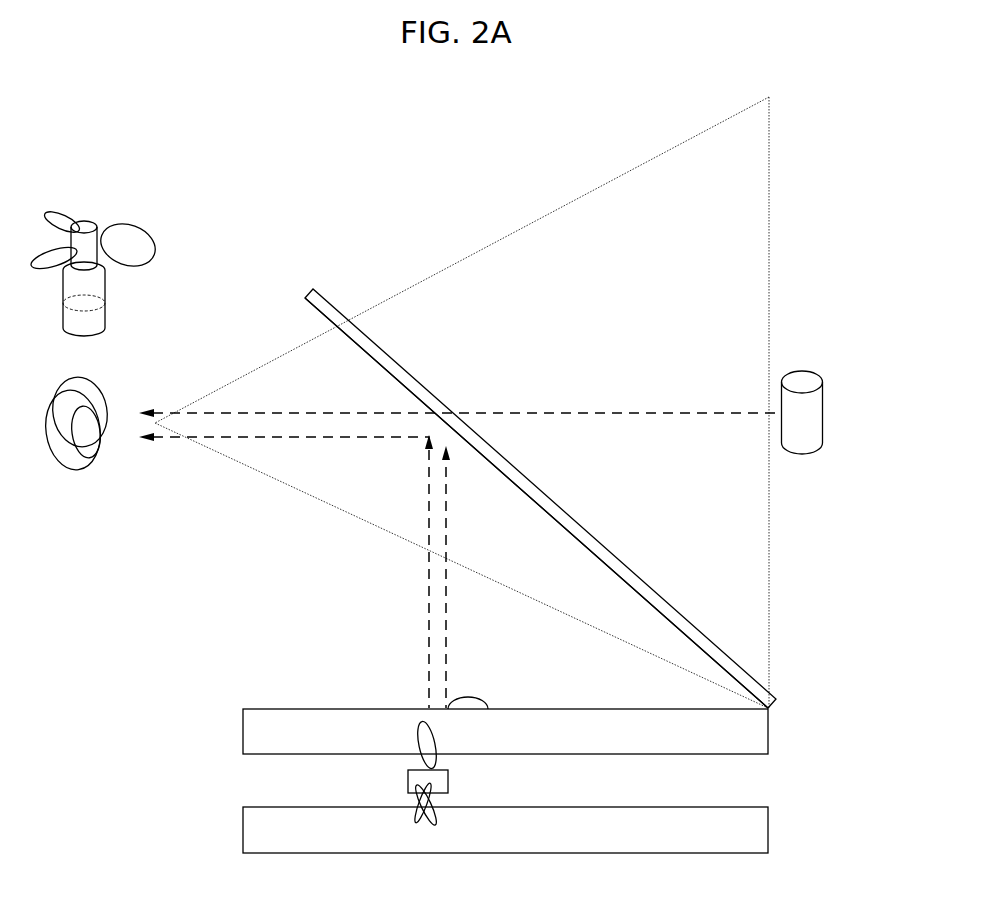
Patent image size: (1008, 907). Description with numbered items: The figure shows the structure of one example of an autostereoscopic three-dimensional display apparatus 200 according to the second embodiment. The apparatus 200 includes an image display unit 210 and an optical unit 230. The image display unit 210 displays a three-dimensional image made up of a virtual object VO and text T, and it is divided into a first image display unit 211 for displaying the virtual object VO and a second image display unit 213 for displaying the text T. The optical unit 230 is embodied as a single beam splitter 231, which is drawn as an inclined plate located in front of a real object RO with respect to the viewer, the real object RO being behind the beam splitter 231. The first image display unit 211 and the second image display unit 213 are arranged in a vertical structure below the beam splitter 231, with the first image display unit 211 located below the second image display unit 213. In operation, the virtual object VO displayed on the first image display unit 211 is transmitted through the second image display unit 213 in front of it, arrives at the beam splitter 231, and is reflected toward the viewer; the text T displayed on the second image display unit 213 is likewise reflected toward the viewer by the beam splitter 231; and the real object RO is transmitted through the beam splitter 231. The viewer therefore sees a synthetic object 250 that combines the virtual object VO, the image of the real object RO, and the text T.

The autostereoscopic 3D display apparatus 200 is at (287, 86).
The image display unit 210 is at (108, 810).
The first image display unit 211 is at (243, 825).
The second image display unit 213 is at (243, 722).
The optical unit 230 is at (345, 280).
The beam splitter 231 is at (317, 287).
The synthetic object 250 is at (125, 205).
The real object RO is at (812, 368).
The text T is at (468, 692).
The 3D virtual object VO is at (400, 800).